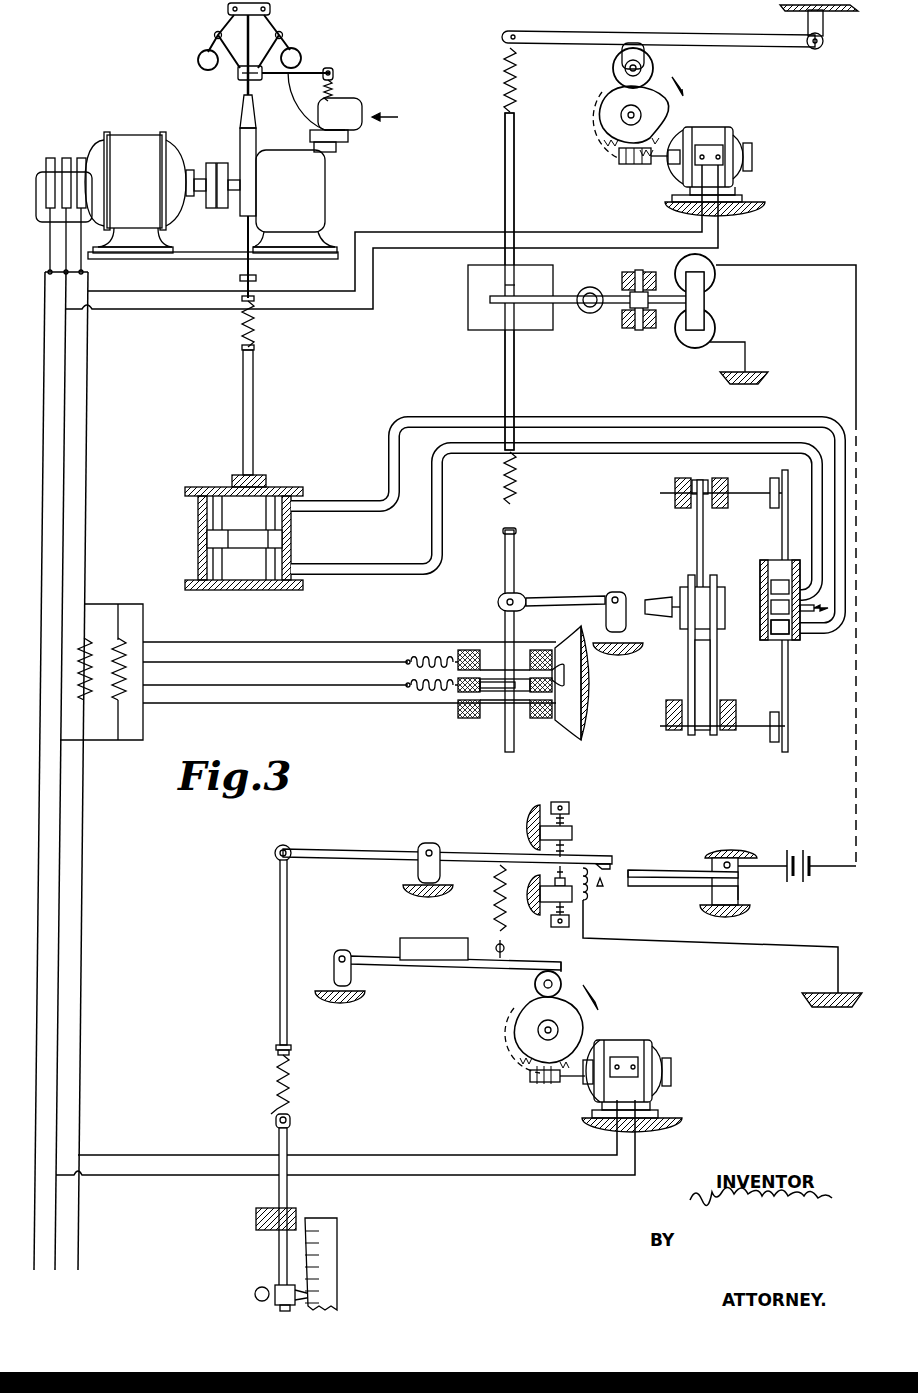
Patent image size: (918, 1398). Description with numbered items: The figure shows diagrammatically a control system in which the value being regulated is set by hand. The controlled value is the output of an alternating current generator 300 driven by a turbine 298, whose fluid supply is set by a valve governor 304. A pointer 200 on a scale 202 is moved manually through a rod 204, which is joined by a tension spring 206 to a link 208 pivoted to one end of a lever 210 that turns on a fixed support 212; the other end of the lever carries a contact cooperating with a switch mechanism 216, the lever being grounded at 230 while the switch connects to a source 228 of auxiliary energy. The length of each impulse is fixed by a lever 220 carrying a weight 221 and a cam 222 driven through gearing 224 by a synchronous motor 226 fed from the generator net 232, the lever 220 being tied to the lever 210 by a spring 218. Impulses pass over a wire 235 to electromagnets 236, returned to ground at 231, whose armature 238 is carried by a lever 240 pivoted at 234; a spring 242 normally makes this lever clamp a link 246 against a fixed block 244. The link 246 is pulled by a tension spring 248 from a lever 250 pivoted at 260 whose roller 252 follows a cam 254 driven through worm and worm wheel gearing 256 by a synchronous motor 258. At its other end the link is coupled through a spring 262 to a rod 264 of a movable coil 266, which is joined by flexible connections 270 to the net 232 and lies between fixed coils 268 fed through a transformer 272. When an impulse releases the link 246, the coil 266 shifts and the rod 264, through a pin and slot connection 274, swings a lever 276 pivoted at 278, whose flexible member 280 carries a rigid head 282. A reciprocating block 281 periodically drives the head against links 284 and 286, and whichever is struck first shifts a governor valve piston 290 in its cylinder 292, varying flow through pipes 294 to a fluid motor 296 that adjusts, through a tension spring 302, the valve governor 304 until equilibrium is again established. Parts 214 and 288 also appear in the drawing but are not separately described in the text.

The pointer 200 is at (278, 1290).
The scale 202 is at (325, 1262).
The rod 204 is at (290, 1150).
The tension spring 206 is at (292, 1085).
The link 208 is at (288, 945).
The lever 210 is at (362, 852).
The fixed support 212 is at (436, 850).
The contacts 214 is at (568, 880).
The switch mechanism 216 is at (600, 884).
The spring 218 is at (494, 905).
The lever 220 is at (487, 968).
The weight 221 is at (440, 950).
The cam 222 is at (570, 1005).
The gearing 224 is at (540, 1068).
The synchronous motor 226 is at (622, 1055).
The source of auxiliary electric energy 228 is at (797, 852).
The ground 230 is at (826, 993).
The ground 231 is at (755, 372).
The net 232 is at (40, 810).
The fixed support 234 is at (637, 330).
The wire 235 is at (856, 436).
The electromagnets 236 is at (712, 278).
The armature 238 is at (696, 330).
The lever 240 is at (566, 305).
The spring 242 is at (590, 314).
The fixed block 244 is at (497, 330).
The link 246 is at (510, 290).
The tension spring 248 is at (520, 88).
The lever 250 is at (725, 32).
The roller 252 is at (650, 74).
The cam 254 is at (665, 110).
The worm and worm wheel gearing 256 is at (622, 135).
The synchronous motor 258 is at (708, 137).
The fixed support 260 is at (815, 50).
The spring 262 is at (517, 482).
The rod 264 is at (512, 565).
The movable coil 266 is at (545, 700).
The fixed coils 268 is at (465, 672).
The flexible connections 270 is at (425, 670).
The transformer 272 is at (86, 640).
The pin and slot connection 274 is at (515, 596).
The lever 276 is at (575, 600).
The fixed support 278 is at (626, 598).
The flexible member 280 is at (662, 618).
The block 281 is at (715, 596).
The rigid head 282 is at (715, 610).
The link 284 is at (703, 560).
The link 286 is at (700, 670).
The rod 288 is at (785, 712).
The governor valve piston 290 is at (792, 640).
The cylinder 292 is at (762, 576).
The pipes 294 is at (636, 425).
The fluid motor 296 is at (290, 490).
The turbine 298 is at (243, 165).
The alternating current generator 300 is at (162, 192).
The tension spring 302 is at (256, 330).
The valve governor 304 is at (240, 73).